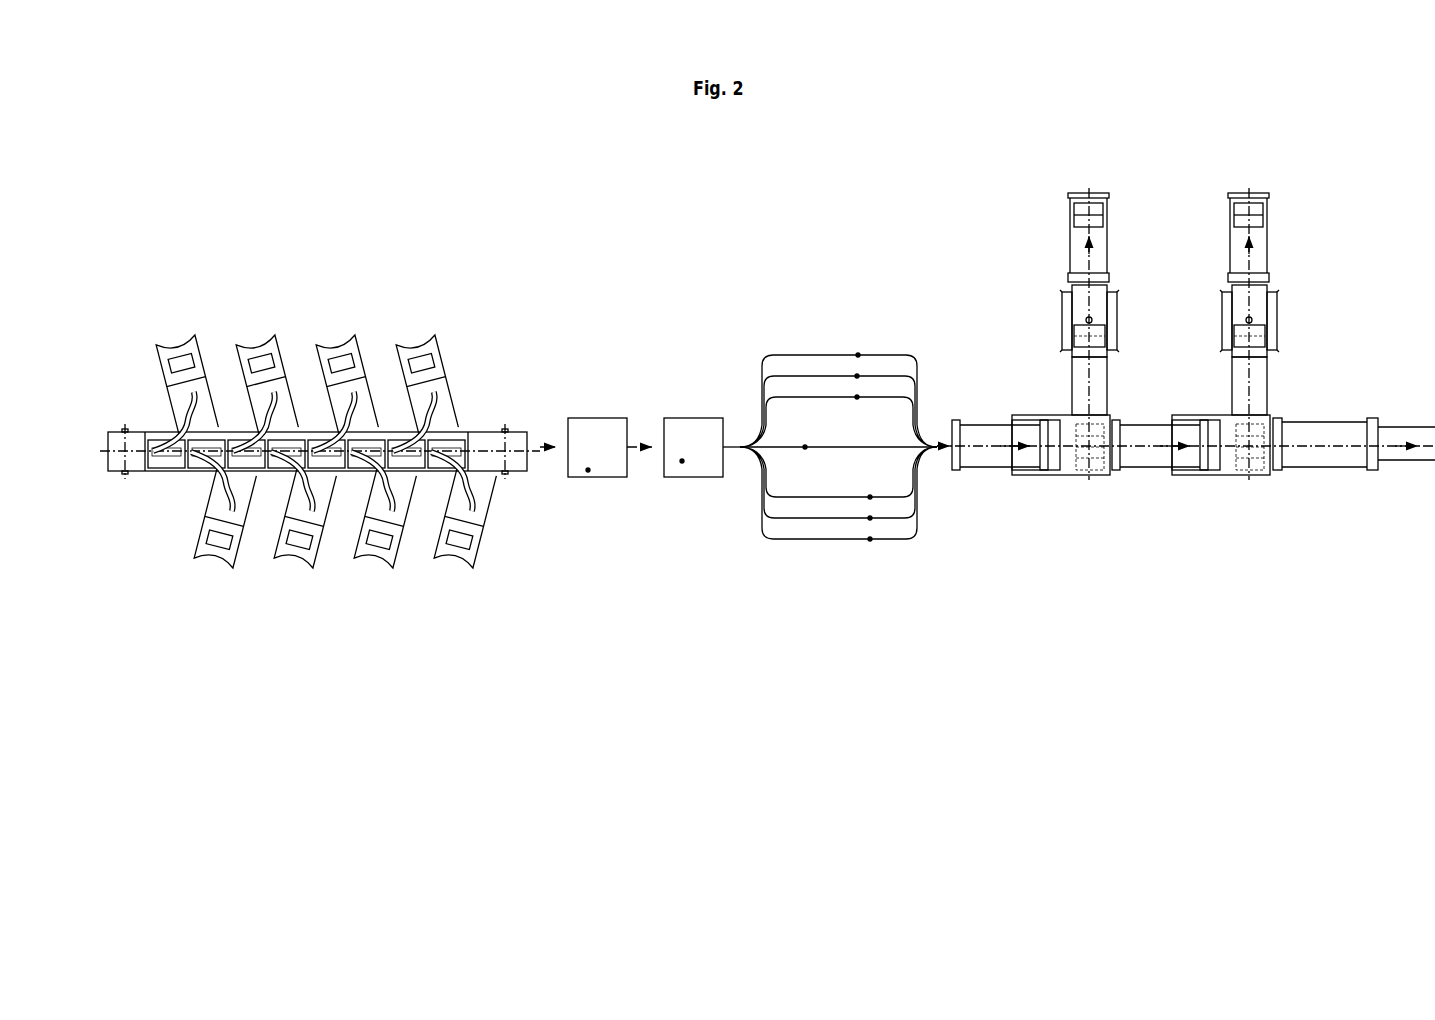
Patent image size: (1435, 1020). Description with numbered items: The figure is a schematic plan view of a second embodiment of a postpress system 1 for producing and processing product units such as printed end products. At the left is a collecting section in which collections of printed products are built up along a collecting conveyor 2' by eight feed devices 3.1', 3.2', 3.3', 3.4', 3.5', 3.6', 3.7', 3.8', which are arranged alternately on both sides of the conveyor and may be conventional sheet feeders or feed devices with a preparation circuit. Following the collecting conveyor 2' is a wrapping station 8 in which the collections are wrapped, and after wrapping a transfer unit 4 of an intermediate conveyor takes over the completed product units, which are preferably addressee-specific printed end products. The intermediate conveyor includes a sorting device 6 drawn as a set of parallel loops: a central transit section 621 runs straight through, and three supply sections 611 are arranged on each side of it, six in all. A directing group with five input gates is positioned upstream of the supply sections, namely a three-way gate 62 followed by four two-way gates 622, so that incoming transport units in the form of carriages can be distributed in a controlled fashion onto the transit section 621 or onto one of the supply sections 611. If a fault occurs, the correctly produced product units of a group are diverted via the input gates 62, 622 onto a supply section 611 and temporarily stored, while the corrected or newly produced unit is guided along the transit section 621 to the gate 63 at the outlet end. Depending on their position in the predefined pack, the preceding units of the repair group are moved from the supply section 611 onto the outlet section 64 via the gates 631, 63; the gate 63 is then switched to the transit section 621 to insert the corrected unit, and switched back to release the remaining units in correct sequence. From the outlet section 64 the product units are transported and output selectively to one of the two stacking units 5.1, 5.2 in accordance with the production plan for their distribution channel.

The postpress system 1 is at (778, 705).
The collecting conveyor 2' is at (320, 312).
The feed device 3.1' is at (465, 566).
The feed device 3.2' is at (411, 335).
The feed device 3.3' is at (383, 544).
The feed device 3.4' is at (330, 352).
The feed device 3.5' is at (303, 567).
The feed device 3.6' is at (248, 335).
The feed device 3.7' is at (225, 549).
The feed device 3.8' is at (173, 354).
The transfer unit 4 is at (682, 461).
The wrapping station 8 is at (588, 470).
The sorting device 6 is at (824, 417).
The 3-way gate 62 is at (736, 416).
The transit section 621 is at (805, 447).
The 2-way gates 622 is at (749, 384).
The supply sections 611 is at (856, 395).
The gate 63 is at (941, 428).
The gates 631 is at (929, 385).
The outlet section 64 is at (993, 408).
The stacking unit 5.1 is at (1042, 375).
The stacking unit 5.2 is at (1251, 497).